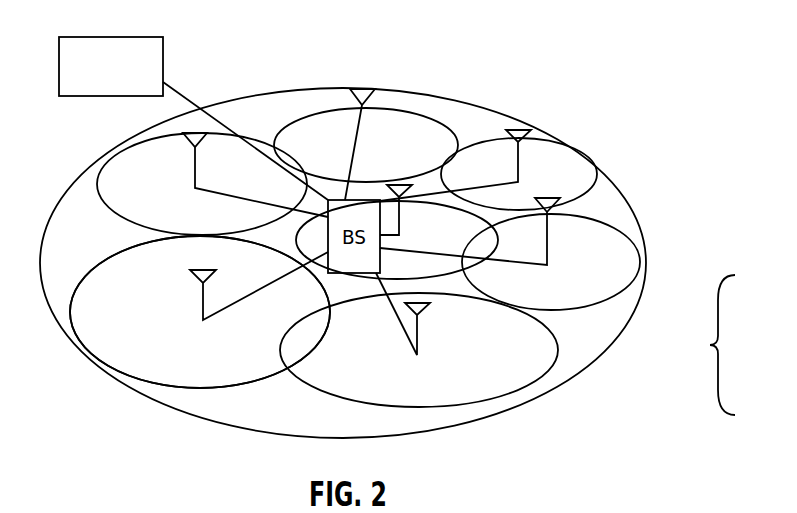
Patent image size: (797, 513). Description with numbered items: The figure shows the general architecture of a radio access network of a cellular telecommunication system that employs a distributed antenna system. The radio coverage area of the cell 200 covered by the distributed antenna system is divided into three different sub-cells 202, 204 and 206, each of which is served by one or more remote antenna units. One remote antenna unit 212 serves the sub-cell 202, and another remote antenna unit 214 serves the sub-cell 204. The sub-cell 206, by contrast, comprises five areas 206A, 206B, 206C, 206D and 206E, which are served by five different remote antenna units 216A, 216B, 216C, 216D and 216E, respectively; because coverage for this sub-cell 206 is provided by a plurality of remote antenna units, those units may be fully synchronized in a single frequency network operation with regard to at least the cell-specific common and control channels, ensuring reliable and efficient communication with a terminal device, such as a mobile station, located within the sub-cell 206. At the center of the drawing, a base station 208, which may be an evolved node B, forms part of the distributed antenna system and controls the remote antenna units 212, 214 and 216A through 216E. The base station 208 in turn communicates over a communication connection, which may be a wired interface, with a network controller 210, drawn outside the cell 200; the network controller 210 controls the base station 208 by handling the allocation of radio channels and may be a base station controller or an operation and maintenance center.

The cell 200 is at (545, 396).
The sub-cell 202 is at (225, 389).
The sub-cell 204 is at (121, 218).
The sub-cell 206 is at (726, 347).
The area of sub-cell 206A is at (400, 222).
The area of sub-cell 206B is at (365, 130).
The area of sub-cell 206C is at (521, 165).
The area of sub-cell 206D is at (550, 258).
The area of sub-cell 206E is at (419, 346).
The base station 208 is at (327, 293).
The network controller 210 is at (59, 50).
The remote antenna unit 212 is at (203, 307).
The remote antenna unit 214 is at (194, 168).
The remote antenna unit 216A is at (394, 258).
The remote antenna unit 216B is at (295, 123).
The remote antenna unit 216C is at (597, 177).
The remote antenna unit 216D is at (602, 216).
The remote antenna unit 216E is at (554, 343).